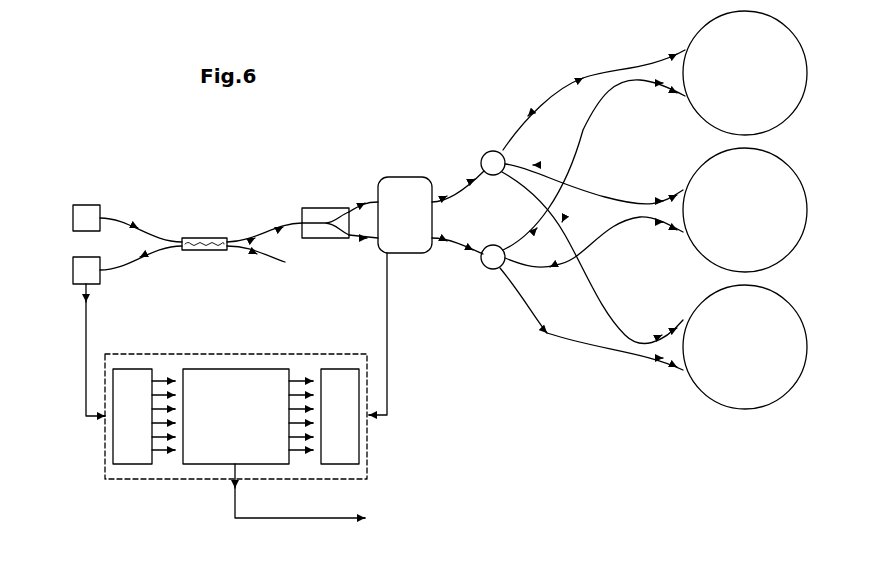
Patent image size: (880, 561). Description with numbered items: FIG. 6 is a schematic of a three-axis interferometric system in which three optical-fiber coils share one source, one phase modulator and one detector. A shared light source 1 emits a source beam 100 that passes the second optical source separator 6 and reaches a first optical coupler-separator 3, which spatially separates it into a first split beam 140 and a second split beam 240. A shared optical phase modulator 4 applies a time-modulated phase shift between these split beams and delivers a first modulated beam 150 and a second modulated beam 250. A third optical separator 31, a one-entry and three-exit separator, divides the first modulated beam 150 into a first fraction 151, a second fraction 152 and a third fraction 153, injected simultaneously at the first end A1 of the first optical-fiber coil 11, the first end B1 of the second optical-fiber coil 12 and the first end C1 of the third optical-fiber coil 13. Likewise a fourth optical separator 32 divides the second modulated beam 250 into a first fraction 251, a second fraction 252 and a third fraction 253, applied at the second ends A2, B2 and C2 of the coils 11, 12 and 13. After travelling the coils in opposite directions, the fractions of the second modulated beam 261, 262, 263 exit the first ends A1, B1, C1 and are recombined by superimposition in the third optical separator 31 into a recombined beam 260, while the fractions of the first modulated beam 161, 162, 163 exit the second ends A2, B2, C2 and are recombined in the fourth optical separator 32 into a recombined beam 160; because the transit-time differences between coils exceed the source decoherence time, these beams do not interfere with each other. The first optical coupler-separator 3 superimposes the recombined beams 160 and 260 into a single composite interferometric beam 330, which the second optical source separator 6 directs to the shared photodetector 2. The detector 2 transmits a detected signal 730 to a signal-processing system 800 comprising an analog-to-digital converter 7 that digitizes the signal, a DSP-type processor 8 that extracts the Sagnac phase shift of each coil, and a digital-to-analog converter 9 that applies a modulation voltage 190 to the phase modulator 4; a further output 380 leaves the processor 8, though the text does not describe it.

The light source 1 is at (87, 204).
The photodetector 2 is at (100, 280).
The first optical coupler-separator 3 is at (322, 208).
The optical phase modulator 4 is at (400, 177).
The second optical source separator 6 is at (205, 250).
The analog-to-digital converter 7 is at (124, 465).
The processor of the DSP type 8 is at (215, 369).
The digital-to-analog converter 9 is at (341, 369).
The first optical-fiber coil 11 is at (805, 60).
The second optical-fiber coil 12 is at (806, 194).
The third optical-fiber coil 13 is at (806, 333).
The third optical separator 31 is at (490, 151).
The fourth optical separator 32 is at (490, 270).
The source beam 100 is at (136, 226).
The first split beam 140 is at (363, 203).
The first modulated beam 150 is at (446, 196).
The first fraction of the first modulated beam 151 is at (581, 78).
The second fraction of the first modulated beam 152 is at (662, 199).
The third fraction of the first modulated beam 153 is at (661, 334).
The recombined beam 160 is at (472, 251).
The first fraction of the first modulated beam having travelled through the first co 161 is at (535, 229).
The second fraction of the first modulated beam having travelled through the second 162 is at (551, 268).
The third fraction of the first modulated beam having travelled through the third co 163 is at (546, 334).
The modulation voltage 190 is at (372, 419).
The second split beam 240 is at (366, 240).
The second modulated beam 250 is at (446, 243).
The first fraction of the second modulated beam 251 is at (661, 83).
The second fraction of the second modulated beam 252 is at (661, 222).
The third fraction of the second modulated beam 253 is at (661, 359).
The recombined beam 260 is at (474, 179).
The first fraction of the second modulated beam having travelled through the first c 261 is at (529, 115).
The second fraction of the second modulated beam having travelled through the second 262 is at (534, 165).
The third fraction of the second modulated beam having travelled through the third c 263 is at (563, 221).
The interferometric beam 330 is at (253, 238).
The output signal line 380 is at (370, 509).
The detected signal 730 is at (89, 305).
The signal-processing system 800 is at (105, 459).
The first end of the first optical-fiber coil A1 is at (670, 40).
The second end of the first optical-fiber coil A2 is at (670, 108).
The first end of the second optical-fiber coil B1 is at (677, 179).
The second end of the second optical-fiber coil B2 is at (677, 246).
The first end of the third optical-fiber coil C1 is at (680, 313).
The second end of the third optical-fiber coil C2 is at (678, 382).